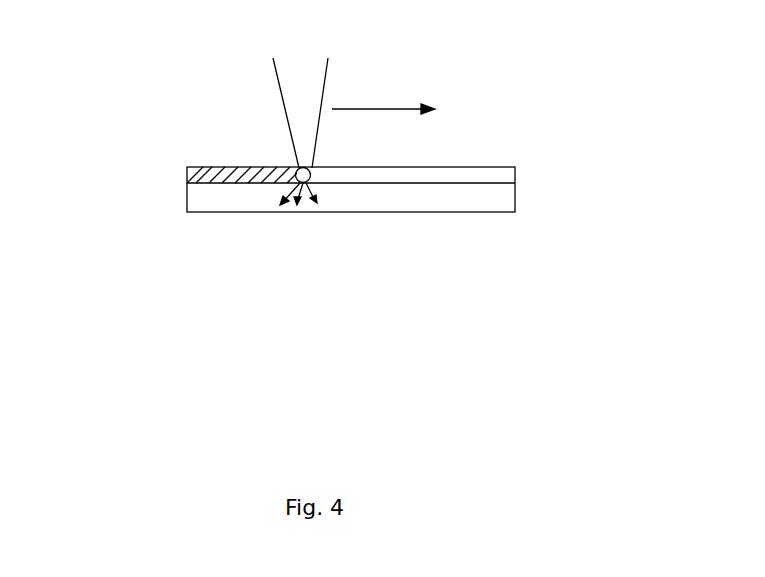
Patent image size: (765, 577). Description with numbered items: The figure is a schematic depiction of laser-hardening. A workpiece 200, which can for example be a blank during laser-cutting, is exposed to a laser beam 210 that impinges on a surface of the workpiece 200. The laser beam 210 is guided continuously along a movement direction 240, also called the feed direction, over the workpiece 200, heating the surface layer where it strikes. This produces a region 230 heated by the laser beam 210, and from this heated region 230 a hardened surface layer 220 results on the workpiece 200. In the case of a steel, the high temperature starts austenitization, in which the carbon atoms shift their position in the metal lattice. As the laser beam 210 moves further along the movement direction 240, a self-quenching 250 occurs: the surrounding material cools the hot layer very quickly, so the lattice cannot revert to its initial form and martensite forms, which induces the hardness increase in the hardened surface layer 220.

The workpiece 200 is at (213, 202).
The laser beam 210 is at (313, 87).
The hardened surface layer 220 is at (192, 173).
The region heated by the laser beam 230 is at (327, 167).
The movement direction 240 is at (418, 108).
The self-quenching 250 is at (310, 207).